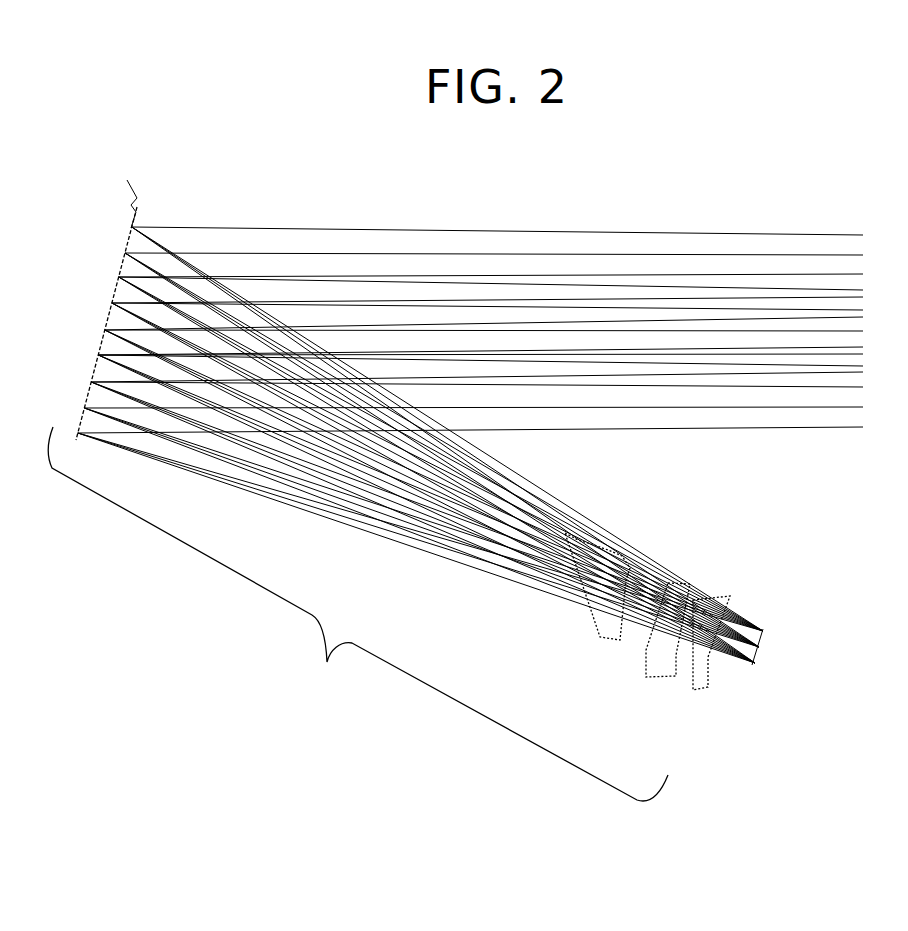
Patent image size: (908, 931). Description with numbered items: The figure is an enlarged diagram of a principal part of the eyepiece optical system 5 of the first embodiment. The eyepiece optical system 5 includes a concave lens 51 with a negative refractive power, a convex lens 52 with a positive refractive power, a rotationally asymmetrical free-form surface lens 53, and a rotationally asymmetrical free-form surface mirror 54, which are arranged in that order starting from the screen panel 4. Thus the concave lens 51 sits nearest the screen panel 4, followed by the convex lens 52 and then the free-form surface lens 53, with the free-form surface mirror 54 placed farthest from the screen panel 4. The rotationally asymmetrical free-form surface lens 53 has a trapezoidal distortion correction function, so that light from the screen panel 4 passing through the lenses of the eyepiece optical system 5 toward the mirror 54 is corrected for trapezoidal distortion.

The rotationally asymmetrical free-form surface mirror 54 is at (126, 188).
The eyepiece optical system 5 is at (358, 614).
The rotationally asymmetrical free-form surface lens 53 is at (590, 636).
The convex lens 52 is at (648, 662).
The concave lens 51 is at (690, 682).
The screen panel 4 is at (763, 636).